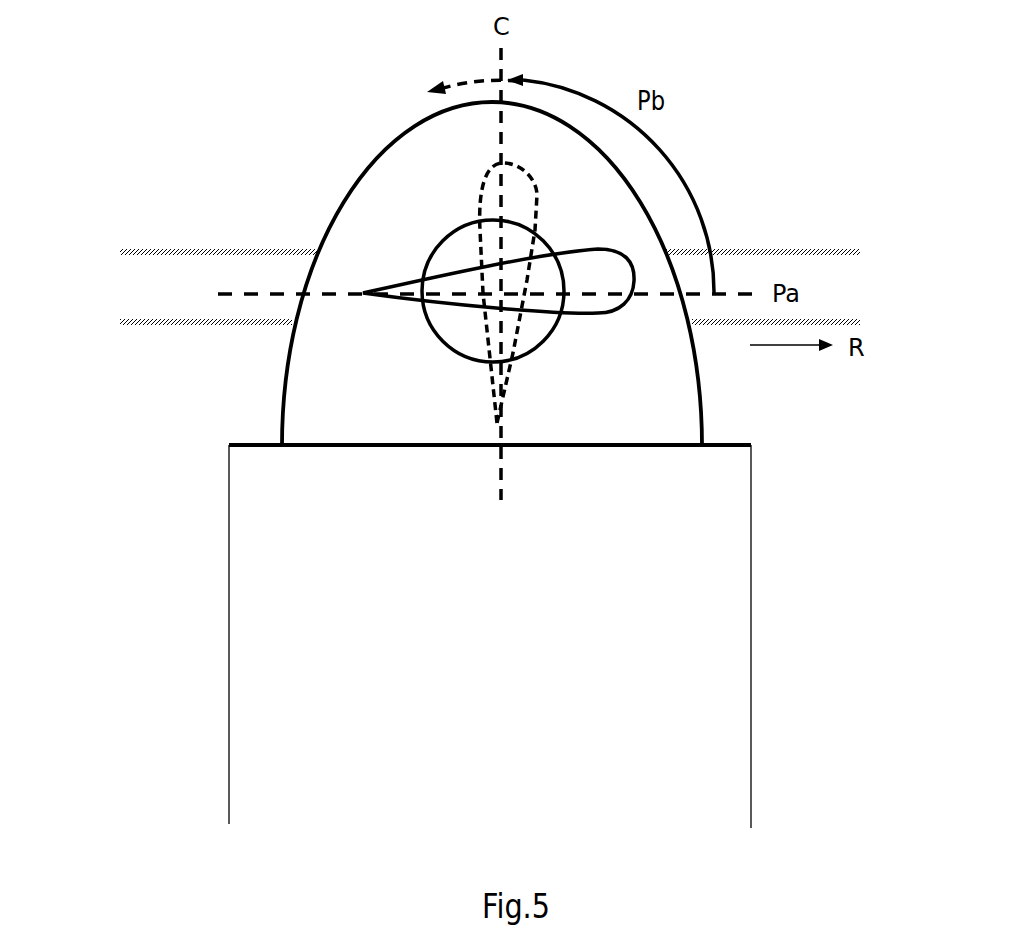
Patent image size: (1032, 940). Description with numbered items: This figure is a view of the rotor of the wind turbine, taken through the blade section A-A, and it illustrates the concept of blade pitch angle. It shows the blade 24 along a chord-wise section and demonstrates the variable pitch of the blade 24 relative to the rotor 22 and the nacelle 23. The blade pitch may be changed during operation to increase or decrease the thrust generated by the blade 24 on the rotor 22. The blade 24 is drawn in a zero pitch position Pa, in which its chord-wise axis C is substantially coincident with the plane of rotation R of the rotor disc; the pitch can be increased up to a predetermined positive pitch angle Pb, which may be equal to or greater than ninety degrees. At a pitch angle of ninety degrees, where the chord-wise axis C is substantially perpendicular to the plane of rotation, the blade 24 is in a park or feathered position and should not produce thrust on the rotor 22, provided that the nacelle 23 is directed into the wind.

The rotor 22 is at (346, 184).
The nacelle 23 is at (751, 492).
The blade 24 is at (619, 308).